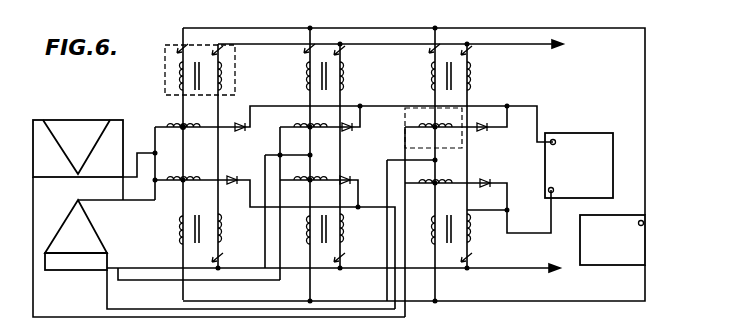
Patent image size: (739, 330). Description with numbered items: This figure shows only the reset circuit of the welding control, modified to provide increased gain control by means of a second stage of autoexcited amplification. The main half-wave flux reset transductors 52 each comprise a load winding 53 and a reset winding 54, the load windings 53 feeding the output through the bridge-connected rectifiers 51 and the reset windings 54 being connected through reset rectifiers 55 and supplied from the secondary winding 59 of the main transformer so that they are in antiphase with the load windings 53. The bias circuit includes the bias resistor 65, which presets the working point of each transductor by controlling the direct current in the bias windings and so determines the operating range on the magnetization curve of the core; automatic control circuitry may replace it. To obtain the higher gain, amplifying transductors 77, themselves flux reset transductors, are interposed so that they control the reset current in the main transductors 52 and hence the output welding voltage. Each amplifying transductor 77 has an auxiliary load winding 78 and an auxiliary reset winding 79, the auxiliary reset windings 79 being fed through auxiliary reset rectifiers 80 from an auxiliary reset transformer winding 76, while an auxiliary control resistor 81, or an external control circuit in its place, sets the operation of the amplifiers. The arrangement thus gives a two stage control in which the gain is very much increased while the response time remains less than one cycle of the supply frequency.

The rectifier 51 is at (480, 256).
The half-wave flux reset transductor 52 is at (230, 95).
The load winding 53 is at (222, 73).
The reset winding 54 is at (178, 78).
The reset rectifier 55 is at (178, 50).
The secondary winding 59 is at (95, 118).
The bias resistor 65 is at (580, 246).
The auxiliary reset transformer winding 76 is at (68, 207).
The amplifying transductor 77 is at (297, 144).
The auxiliary load winding 78 is at (322, 139).
The auxiliary reset winding 79 is at (298, 139).
The auxiliary reset rectifier 80 is at (247, 156).
The auxiliary control resistor 81 is at (545, 166).